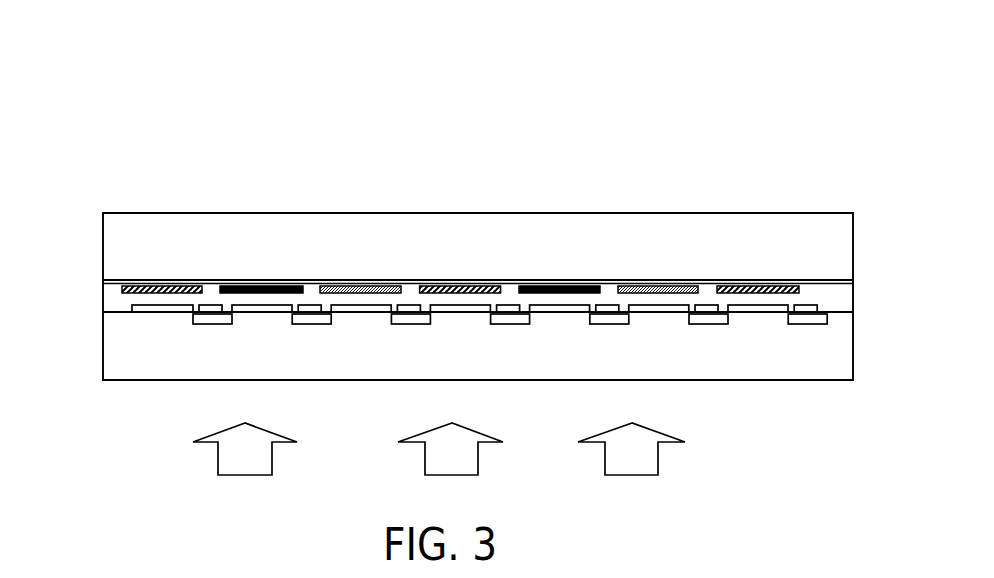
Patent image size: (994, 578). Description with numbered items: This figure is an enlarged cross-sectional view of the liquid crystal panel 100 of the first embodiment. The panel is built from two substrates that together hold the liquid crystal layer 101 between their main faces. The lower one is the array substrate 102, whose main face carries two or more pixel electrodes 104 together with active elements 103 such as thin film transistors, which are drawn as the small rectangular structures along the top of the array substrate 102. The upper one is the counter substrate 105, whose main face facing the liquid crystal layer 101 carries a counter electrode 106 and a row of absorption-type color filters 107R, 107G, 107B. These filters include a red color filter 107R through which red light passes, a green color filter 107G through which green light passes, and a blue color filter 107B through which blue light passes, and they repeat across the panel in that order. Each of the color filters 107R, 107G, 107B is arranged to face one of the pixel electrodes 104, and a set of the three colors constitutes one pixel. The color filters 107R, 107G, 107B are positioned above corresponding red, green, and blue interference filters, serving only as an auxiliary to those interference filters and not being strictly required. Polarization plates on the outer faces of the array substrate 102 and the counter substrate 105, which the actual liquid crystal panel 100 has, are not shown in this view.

The liquid crystal panel 100 is at (791, 117).
The liquid crystal layer 101 is at (118, 300).
The array substrate 102 is at (145, 350).
The active element 103 is at (215, 322).
The pixel electrode 104 is at (138, 315).
The counter substrate 105 is at (117, 250).
The counter electrode 106 is at (108, 283).
The red color filter 107R is at (178, 287).
The green color filter 107G is at (280, 287).
The blue color filter 107B is at (380, 287).